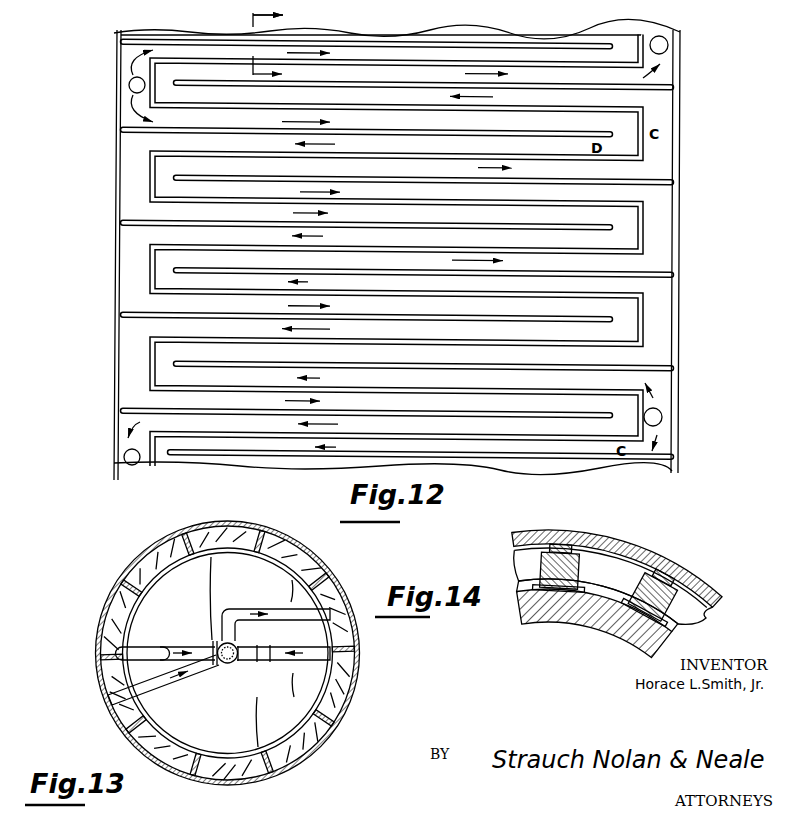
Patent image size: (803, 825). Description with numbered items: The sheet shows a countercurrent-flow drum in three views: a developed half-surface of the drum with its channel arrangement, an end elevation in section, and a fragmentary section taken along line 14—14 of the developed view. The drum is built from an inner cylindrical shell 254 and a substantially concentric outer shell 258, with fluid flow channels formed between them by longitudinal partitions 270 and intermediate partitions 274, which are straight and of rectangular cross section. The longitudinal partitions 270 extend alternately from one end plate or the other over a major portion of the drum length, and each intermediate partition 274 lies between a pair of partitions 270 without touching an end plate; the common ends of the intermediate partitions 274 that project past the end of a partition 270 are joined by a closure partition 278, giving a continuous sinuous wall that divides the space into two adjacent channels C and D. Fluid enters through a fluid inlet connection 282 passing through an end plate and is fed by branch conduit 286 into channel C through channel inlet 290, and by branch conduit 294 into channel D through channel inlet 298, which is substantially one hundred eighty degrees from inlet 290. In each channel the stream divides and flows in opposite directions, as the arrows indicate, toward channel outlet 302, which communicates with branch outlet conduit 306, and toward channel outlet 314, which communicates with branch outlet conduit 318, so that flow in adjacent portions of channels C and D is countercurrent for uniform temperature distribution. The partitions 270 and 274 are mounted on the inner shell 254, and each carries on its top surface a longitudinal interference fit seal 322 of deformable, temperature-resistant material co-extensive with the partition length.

In FIG. 12, the section line 14— 14 is at (255, 45).
In FIG. 13, the inner cylindrical shell 254 is at (168, 566).
In FIG. 14, the inner cylindrical shell 254 is at (596, 616).
In FIG. 13, the outer shell 258 is at (292, 546).
In FIG. 14, the outer shell 258 is at (617, 577).
In FIG. 12, the longitudinal partition 270 is at (134, 39).
In FIG. 14, the longitudinal partition 270 is at (578, 566).
In FIG. 12, the intermediate partition 274 is at (180, 61).
In FIG. 14, the intermediate partition 274 is at (650, 567).
In FIG. 12, the closure partition 278 is at (151, 189).
In FIG. 13, the fluid inlet connection 282 is at (223, 666).
In FIG. 13, the branch conduit 286 is at (247, 608).
In FIG. 12, the channel inlet 290 is at (662, 416).
In FIG. 13, the channel inlet 290 is at (275, 616).
In FIG. 13, the branch conduit 294 is at (178, 645).
In FIG. 12, the channel inlet 298 is at (129, 85).
In FIG. 13, the channel inlet 298 is at (130, 646).
In FIG. 12, the channel outlet 302 is at (660, 37).
In FIG. 13, the channel outlet 302 is at (163, 655).
In FIG. 13, the branch outlet conduit 306 is at (192, 681).
In FIG. 12, the channel outlet 314 is at (124, 455).
In FIG. 13, the channel outlet 314 is at (277, 662).
In FIG. 13, the branch outlet conduit 318 is at (240, 661).
In FIG. 14, the longitudinal interference fit seal 322 is at (556, 545).